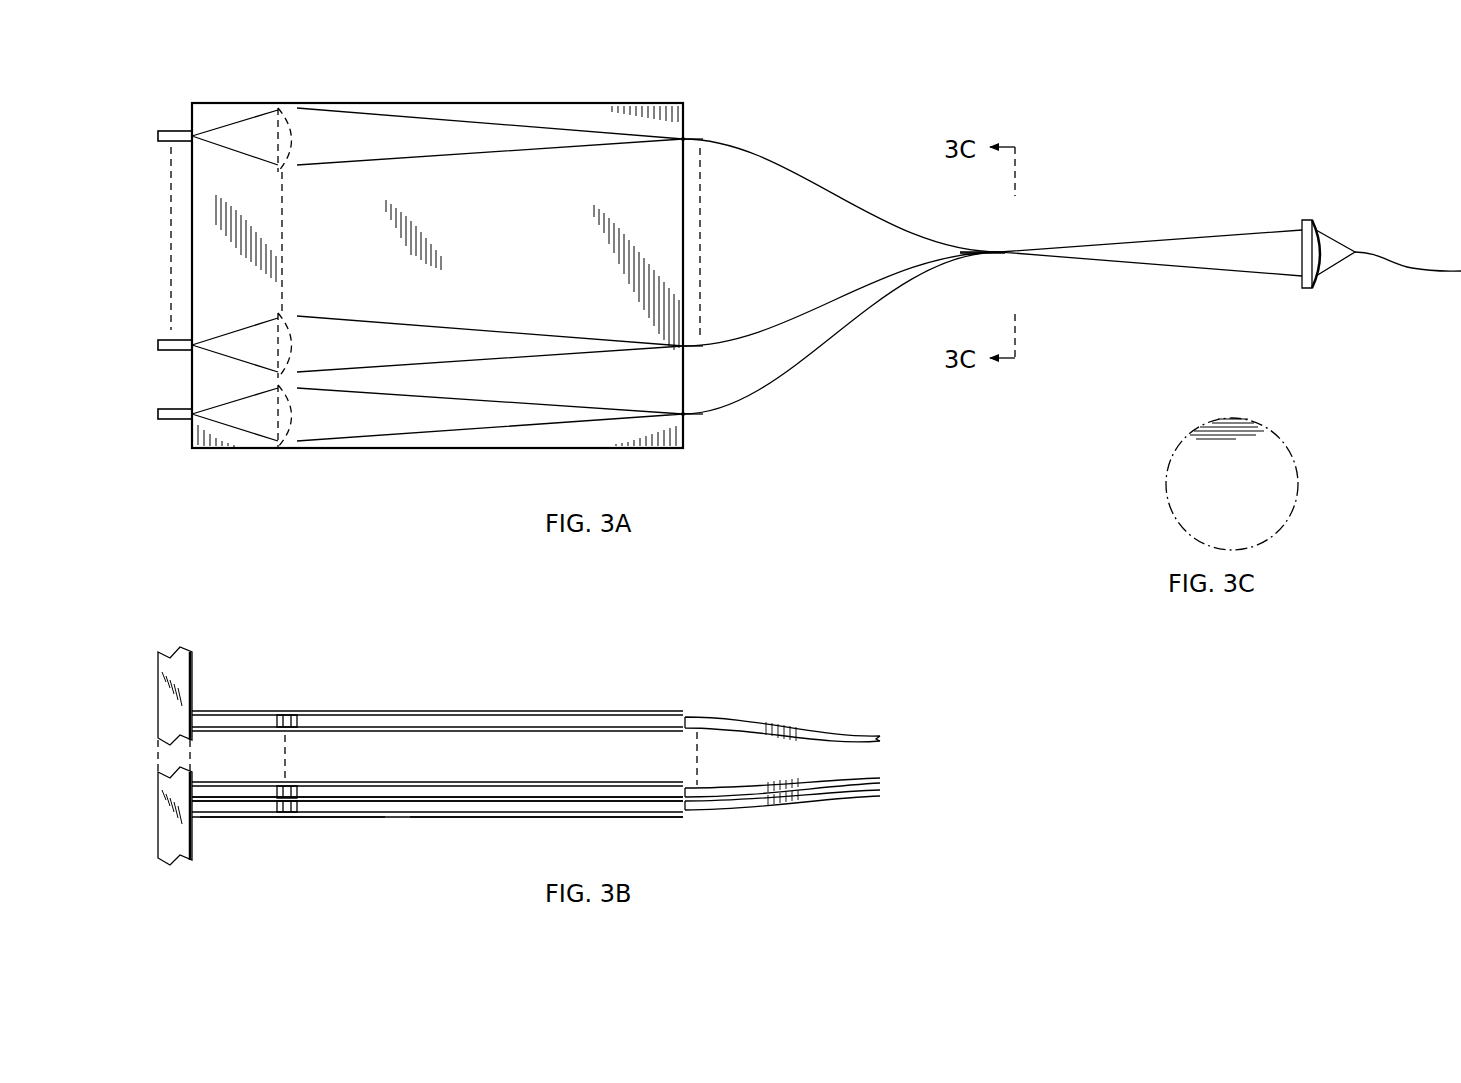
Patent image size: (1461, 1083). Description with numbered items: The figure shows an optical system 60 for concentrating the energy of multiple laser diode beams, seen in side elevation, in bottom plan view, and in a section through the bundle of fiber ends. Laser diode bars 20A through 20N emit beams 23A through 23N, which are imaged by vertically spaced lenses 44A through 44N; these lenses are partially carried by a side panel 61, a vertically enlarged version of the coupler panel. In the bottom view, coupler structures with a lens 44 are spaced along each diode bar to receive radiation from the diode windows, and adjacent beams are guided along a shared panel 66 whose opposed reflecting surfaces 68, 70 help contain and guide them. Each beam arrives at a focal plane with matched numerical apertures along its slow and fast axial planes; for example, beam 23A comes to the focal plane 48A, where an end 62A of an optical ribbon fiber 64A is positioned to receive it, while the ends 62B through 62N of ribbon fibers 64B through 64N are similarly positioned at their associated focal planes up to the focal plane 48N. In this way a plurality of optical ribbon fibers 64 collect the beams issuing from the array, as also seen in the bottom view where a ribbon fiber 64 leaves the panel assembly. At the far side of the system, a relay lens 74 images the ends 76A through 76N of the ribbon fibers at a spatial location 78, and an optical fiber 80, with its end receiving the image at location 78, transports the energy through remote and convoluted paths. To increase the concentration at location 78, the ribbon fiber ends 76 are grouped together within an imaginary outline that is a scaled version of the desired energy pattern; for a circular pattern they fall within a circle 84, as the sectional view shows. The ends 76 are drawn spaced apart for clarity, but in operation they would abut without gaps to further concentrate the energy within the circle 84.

In FIG. 3A, the diode bar 20N is at (178, 131).
In FIG. 3A, the diode bar 20A is at (178, 424).
In FIG. 3B, the diode bar 20A is at (196, 673).
In FIG. 3A, the beam 23N is at (250, 110).
In FIG. 3A, the beam 23A is at (240, 436).
In FIG. 3A, the lens 44N is at (296, 117).
In FIG. 3A, the lens 44A is at (296, 440).
In FIG. 3B, the lens 44 is at (298, 806).
In FIG. 3A, the focal plane 48N is at (672, 148).
In FIG. 3A, the focal plane 48A is at (678, 408).
In FIG. 3A, the optical system 60 is at (1125, 113).
In FIG. 3B, the optical system 60 is at (806, 676).
In FIG. 3A, the side panel 61 is at (548, 223).
In FIG. 3B, the side panel 61 is at (402, 709).
In FIG. 3A, the end of optical ribbon fiber 62N is at (706, 140).
In FIG. 3A, the end of optical ribbon fiber 62B is at (706, 344).
In FIG. 3A, the end of optical ribbon fiber 62A is at (696, 421).
In FIG. 3A, the optical ribbon fiber 64N is at (832, 186).
In FIG. 3A, the optical ribbon fiber 64B is at (832, 297).
In FIG. 3A, the optical ribbon fiber 64A is at (835, 347).
In FIG. 3B, the optical ribbon fibers 64 is at (850, 726).
In FIG. 3B, the panel 66 is at (410, 810).
In FIG. 3B, the reflecting surface 68 is at (548, 804).
In FIG. 3B, the reflecting surface 70 is at (544, 796).
In FIG. 3A, the relay lens 74 is at (1304, 220).
In FIG. 3A, the end of optical ribbon fiber 76N is at (990, 246).
In FIG. 3A, the end of optical ribbon fiber 76A is at (990, 258).
In FIG. 3C, the ribbon fiber ends 76 is at (1196, 436).
In FIG. 3A, the spatial location 78 is at (1354, 262).
In FIG. 3A, the optical fiber 80 is at (1406, 250).
In FIG. 3C, the circle 84 is at (1296, 455).